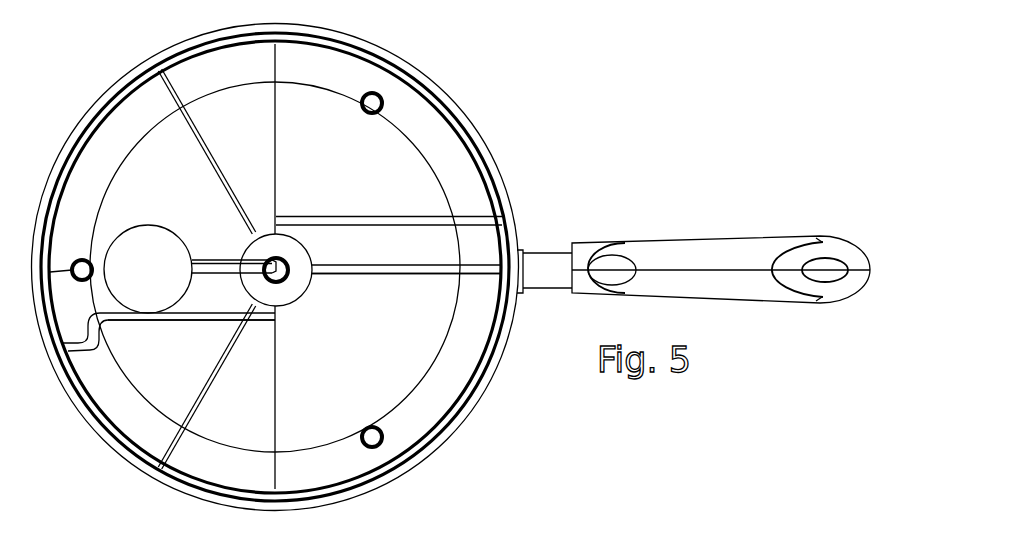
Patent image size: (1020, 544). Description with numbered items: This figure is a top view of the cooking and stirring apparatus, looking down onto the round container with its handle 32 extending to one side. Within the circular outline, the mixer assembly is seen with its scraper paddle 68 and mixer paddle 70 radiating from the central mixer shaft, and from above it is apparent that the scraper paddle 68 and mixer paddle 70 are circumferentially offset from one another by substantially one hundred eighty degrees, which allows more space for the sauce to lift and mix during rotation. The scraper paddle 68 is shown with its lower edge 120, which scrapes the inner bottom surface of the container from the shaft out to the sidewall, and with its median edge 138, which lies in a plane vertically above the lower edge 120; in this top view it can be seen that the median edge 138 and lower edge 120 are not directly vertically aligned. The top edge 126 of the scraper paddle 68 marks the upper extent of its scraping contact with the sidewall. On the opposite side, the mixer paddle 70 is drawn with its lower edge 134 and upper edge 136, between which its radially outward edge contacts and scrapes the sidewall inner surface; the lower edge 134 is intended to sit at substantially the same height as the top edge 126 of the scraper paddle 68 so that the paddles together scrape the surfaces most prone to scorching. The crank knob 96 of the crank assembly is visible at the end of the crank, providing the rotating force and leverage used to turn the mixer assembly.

The handle 32 is at (732, 240).
The scraper paddle 68 is at (163, 321).
The mixer paddle 70 is at (410, 275).
The crank knob 96 is at (148, 225).
The lower edge 120 is at (202, 259).
The top edge 126 is at (73, 350).
The lower edge 134 is at (390, 216).
The upper edge 136 is at (347, 275).
The median edge 138 is at (202, 322).